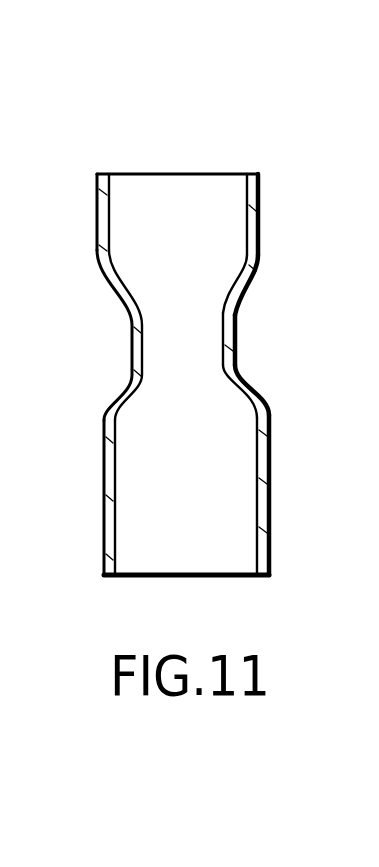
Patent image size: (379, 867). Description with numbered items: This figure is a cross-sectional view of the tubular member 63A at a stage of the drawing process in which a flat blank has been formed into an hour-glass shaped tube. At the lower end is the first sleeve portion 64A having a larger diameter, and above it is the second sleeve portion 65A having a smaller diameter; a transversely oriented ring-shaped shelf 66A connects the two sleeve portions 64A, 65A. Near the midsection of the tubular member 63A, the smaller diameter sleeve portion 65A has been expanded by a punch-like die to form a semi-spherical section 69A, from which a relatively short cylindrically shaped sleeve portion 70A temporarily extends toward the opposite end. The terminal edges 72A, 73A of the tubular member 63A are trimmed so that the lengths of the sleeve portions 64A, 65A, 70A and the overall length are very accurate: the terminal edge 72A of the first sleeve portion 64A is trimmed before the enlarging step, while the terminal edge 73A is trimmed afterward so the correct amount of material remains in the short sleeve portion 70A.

The tubular member 63A is at (166, 124).
The first sleeve portion 64A is at (272, 488).
The second sleeve portion 65A is at (130, 352).
The ring-shaped shelf 66A is at (255, 383).
The semi-spherical section 69A is at (255, 292).
The short cylindrically shaped sleeve portion 70A is at (259, 222).
The terminal edge 72A is at (170, 577).
The terminal edge 73A is at (203, 173).